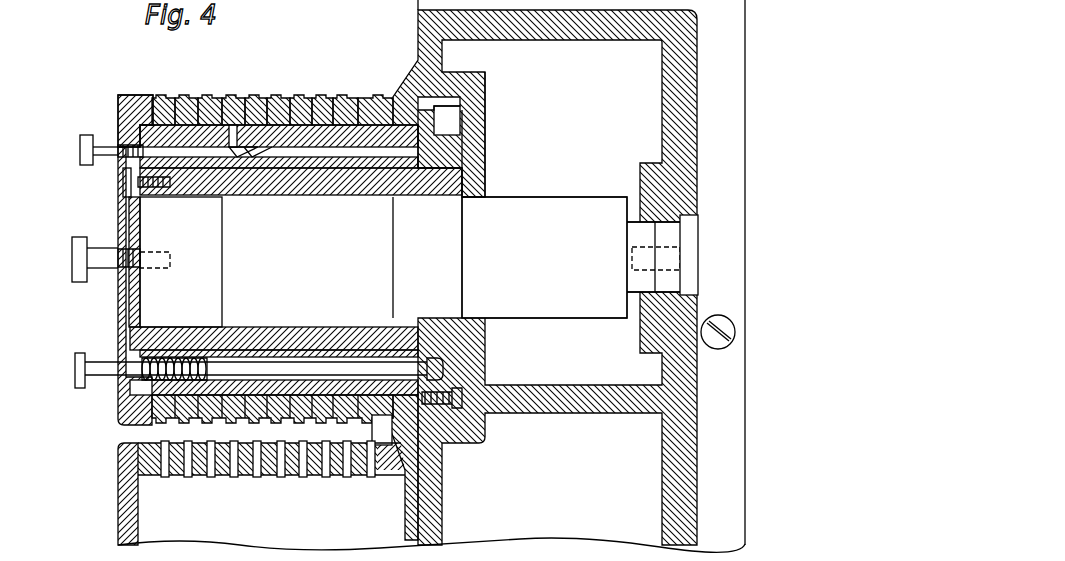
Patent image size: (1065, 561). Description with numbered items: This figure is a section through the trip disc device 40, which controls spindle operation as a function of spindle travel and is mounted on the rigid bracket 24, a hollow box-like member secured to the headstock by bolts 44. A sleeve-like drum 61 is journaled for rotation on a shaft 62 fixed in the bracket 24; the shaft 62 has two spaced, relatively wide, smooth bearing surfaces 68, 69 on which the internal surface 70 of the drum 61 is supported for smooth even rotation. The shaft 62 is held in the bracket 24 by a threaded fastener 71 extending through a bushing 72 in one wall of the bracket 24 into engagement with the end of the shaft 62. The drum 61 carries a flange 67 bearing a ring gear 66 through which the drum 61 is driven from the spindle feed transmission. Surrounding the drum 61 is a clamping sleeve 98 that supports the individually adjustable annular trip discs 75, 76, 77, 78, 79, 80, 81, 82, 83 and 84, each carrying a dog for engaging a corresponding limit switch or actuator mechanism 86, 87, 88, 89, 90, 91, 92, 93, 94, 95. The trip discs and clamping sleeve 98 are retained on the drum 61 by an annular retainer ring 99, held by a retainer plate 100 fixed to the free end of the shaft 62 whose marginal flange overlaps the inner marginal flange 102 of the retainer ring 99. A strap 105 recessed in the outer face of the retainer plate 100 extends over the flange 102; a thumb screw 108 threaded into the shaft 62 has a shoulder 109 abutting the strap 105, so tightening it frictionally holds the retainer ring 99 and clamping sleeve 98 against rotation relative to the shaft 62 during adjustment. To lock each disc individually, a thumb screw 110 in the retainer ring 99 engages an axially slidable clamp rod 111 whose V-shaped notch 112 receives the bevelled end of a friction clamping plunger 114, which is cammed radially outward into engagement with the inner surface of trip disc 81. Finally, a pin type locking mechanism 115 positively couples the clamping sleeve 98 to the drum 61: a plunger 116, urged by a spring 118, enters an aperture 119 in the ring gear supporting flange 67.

The bracket 24 is at (690, 62).
The trip disc device 40 is at (128, 92).
The bolts 44 is at (718, 349).
The drum 61 is at (300, 330).
The shaft 62 is at (572, 318).
The ring gear 66 is at (458, 118).
The flange 67 is at (456, 160).
The bearing surface 68 is at (452, 200).
The bearing surface 69 is at (222, 232).
The internal surface 70 is at (295, 197).
The threaded fastener 71 is at (700, 268).
The bushing 72 is at (672, 230).
The trip disc 75 is at (376, 97).
The trip disc 76 is at (352, 97).
The trip disc 77 is at (330, 97).
The trip disc 78 is at (305, 97).
The trip disc 79 is at (282, 97).
The trip disc 80 is at (258, 97).
The trip disc 81 is at (236, 97).
The trip disc 82 is at (216, 97).
The trip disc 83 is at (188, 97).
The trip disc 84 is at (163, 97).
The limit switch or actuator mechanism 86 is at (371, 478).
The limit switch or actuator mechanism 87 is at (347, 478).
The limit switch or actuator mechanism 88 is at (326, 478).
The limit switch or actuator mechanism 89 is at (303, 478).
The limit switch or actuator mechanism 90 is at (281, 478).
The limit switch or actuator mechanism 91 is at (257, 478).
The limit switch or actuator mechanism 92 is at (234, 478).
The limit switch or actuator mechanism 93 is at (211, 478).
The limit switch or actuator mechanism 94 is at (188, 478).
The limit switch or actuator mechanism 95 is at (163, 478).
The clamping sleeve 98 is at (248, 350).
The retainer ring 99 is at (128, 118).
The retainer plate 100 is at (135, 295).
The inner marginal flange 102 is at (122, 178).
The strap 105 is at (118, 195).
The thumb screw 108 is at (74, 268).
The shoulder 109 is at (150, 256).
The thumb screw 110 is at (80, 148).
The clamp rod 111 is at (148, 145).
The V-shaped notch 112 is at (258, 152).
The friction clamping plunger 114 is at (228, 150).
The pin type locking mechanism 115 is at (75, 375).
The plunger 116 is at (279, 346).
The spring 118 is at (274, 340).
The aperture 119 is at (432, 362).